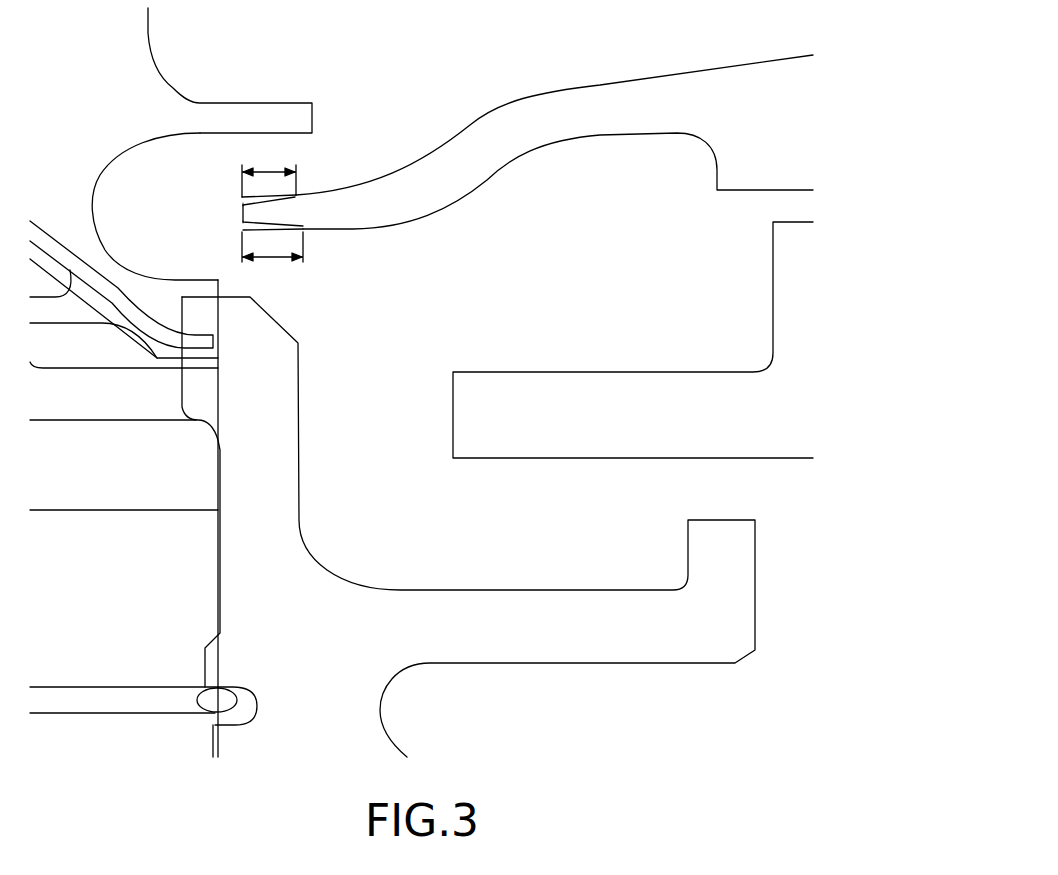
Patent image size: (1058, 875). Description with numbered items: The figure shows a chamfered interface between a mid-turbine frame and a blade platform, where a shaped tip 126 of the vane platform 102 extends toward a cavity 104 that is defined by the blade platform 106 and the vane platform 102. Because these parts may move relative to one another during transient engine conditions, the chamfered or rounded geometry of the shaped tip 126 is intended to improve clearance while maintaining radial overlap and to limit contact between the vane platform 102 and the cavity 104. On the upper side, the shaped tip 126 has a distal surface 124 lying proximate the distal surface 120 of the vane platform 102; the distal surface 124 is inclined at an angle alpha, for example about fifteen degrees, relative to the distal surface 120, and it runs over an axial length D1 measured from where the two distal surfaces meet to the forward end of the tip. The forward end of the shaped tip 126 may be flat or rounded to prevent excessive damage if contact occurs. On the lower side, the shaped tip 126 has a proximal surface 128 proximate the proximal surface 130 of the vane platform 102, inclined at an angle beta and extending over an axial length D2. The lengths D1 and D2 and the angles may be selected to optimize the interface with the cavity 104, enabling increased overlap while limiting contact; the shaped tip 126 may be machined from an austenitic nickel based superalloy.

The vane platform 102 is at (482, 145).
The cavity 104 is at (134, 148).
The blade platform 106 is at (113, 32).
The distal surface of vane platform 120 is at (347, 195).
The distal surface of shaped tip 124 is at (285, 200).
The shaped tip 126 is at (243, 210).
The proximal surface of shaped tip 128 is at (285, 227).
The proximal surface of vane platform 130 is at (441, 216).
The length of distal surface D1 is at (270, 170).
The length of proximal surface D2 is at (275, 262).